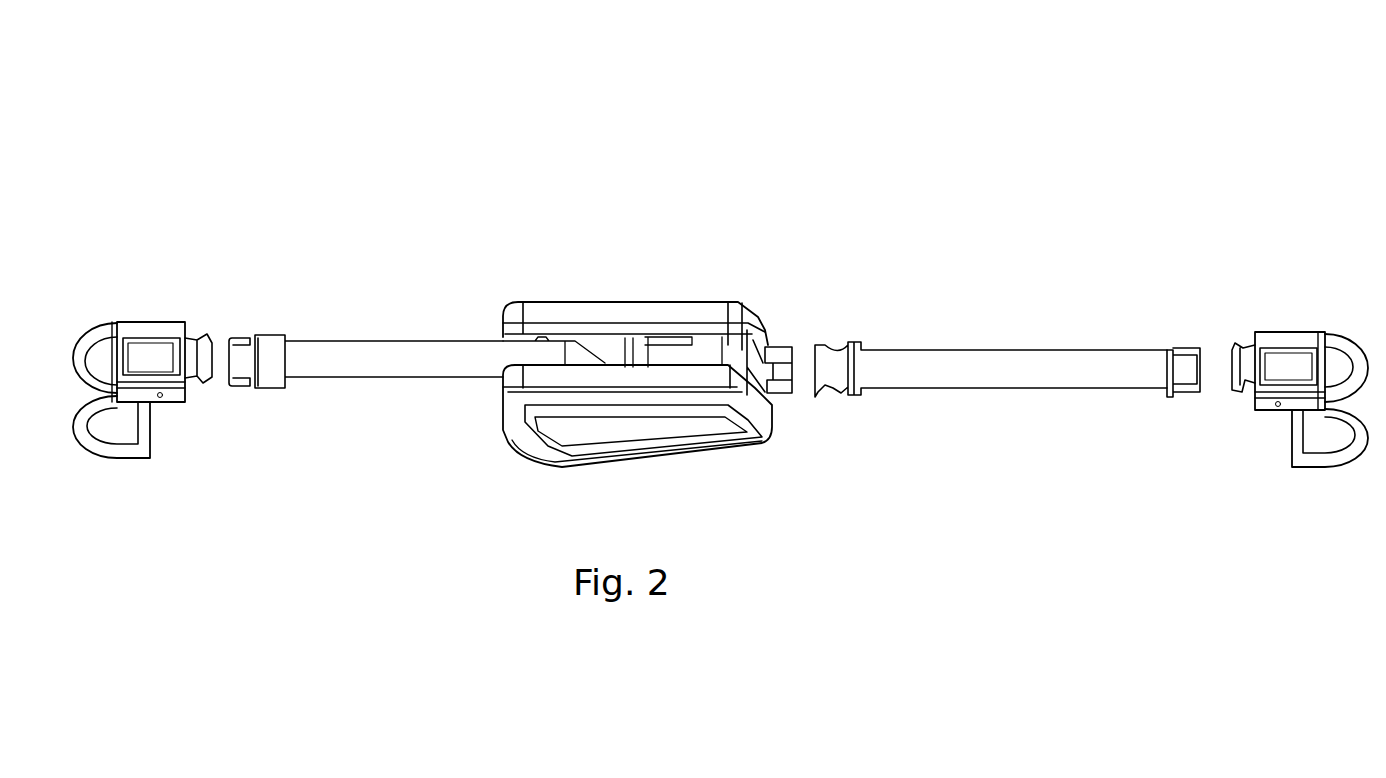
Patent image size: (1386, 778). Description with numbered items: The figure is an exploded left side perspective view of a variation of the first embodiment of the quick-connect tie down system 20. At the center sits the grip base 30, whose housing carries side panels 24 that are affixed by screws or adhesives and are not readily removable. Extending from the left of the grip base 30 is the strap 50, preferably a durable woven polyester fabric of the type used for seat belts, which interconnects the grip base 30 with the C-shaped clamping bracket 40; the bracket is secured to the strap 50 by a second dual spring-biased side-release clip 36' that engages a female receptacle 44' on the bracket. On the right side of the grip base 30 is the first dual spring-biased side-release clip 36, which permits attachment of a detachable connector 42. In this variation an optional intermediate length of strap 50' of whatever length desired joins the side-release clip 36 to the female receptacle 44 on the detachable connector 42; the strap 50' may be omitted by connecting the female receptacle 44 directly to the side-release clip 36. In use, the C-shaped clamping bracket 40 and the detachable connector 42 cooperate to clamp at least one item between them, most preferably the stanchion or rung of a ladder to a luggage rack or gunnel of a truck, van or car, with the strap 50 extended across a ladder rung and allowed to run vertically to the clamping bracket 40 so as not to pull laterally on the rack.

The quick-connect tie down system 20 is at (706, 244).
The side panels 24 is at (651, 302).
The grip base 30 is at (599, 290).
The side-release clip 36 is at (793, 294).
The second side-release clip 36' is at (259, 301).
The C-shaped clamping bracket 40 is at (136, 322).
The detachable connector 42 is at (1292, 332).
The female receptacle 44 is at (1226, 410).
The female receptacle 44' is at (224, 400).
The strap 50 is at (379, 295).
The strap 50' is at (1007, 277).